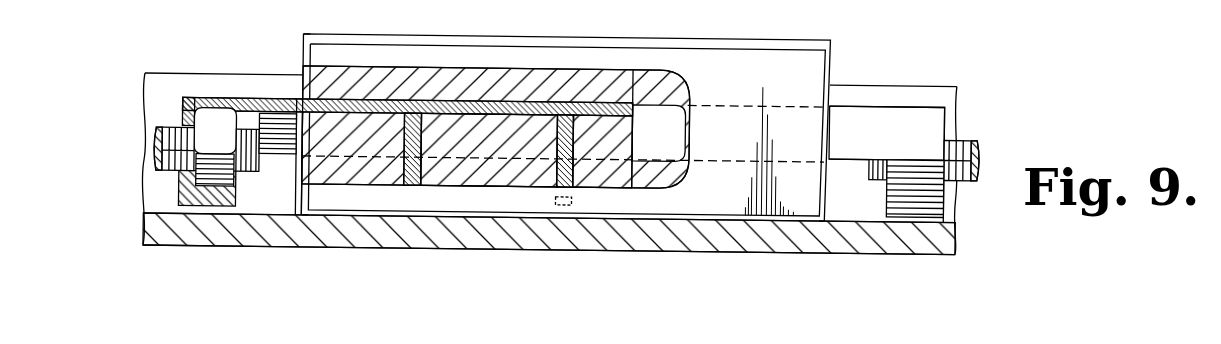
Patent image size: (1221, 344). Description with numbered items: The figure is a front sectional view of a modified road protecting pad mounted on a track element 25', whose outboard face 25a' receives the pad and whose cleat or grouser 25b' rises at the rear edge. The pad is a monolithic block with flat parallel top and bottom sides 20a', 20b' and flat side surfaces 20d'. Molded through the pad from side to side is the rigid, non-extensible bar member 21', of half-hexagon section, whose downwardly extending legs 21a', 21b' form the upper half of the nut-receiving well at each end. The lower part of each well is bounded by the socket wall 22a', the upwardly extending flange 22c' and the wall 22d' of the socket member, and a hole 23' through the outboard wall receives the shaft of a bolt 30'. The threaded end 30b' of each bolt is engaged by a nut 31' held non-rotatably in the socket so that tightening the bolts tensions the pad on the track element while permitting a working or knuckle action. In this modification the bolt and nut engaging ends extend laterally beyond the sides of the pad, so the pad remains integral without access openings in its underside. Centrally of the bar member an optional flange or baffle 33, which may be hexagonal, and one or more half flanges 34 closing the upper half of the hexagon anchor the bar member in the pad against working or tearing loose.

The top side 20a' is at (565, 113).
The bottom side 20b' is at (549, 252).
The side surface 20d' is at (599, 111).
The non-extensible bar member 21' is at (563, 136).
The flange or leg of bar member 21a' is at (273, 160).
The flange or leg of bar member 21b' is at (887, 133).
The socket wall 22a' is at (200, 218).
The socket flange or leg 22c' is at (953, 203).
The socket wall 22d' is at (198, 158).
The perforation or hole 23' is at (539, 140).
The track element 25' is at (549, 179).
The outboard face of track element 25a' is at (413, 246).
The cleat or grouser 25b' is at (967, 72).
The bolt 30' is at (562, 149).
The threaded end of bolt 30b' is at (561, 137).
The nut 31' is at (219, 94).
The flange or baffle 33 is at (560, 144).
The half flange 34 is at (418, 143).